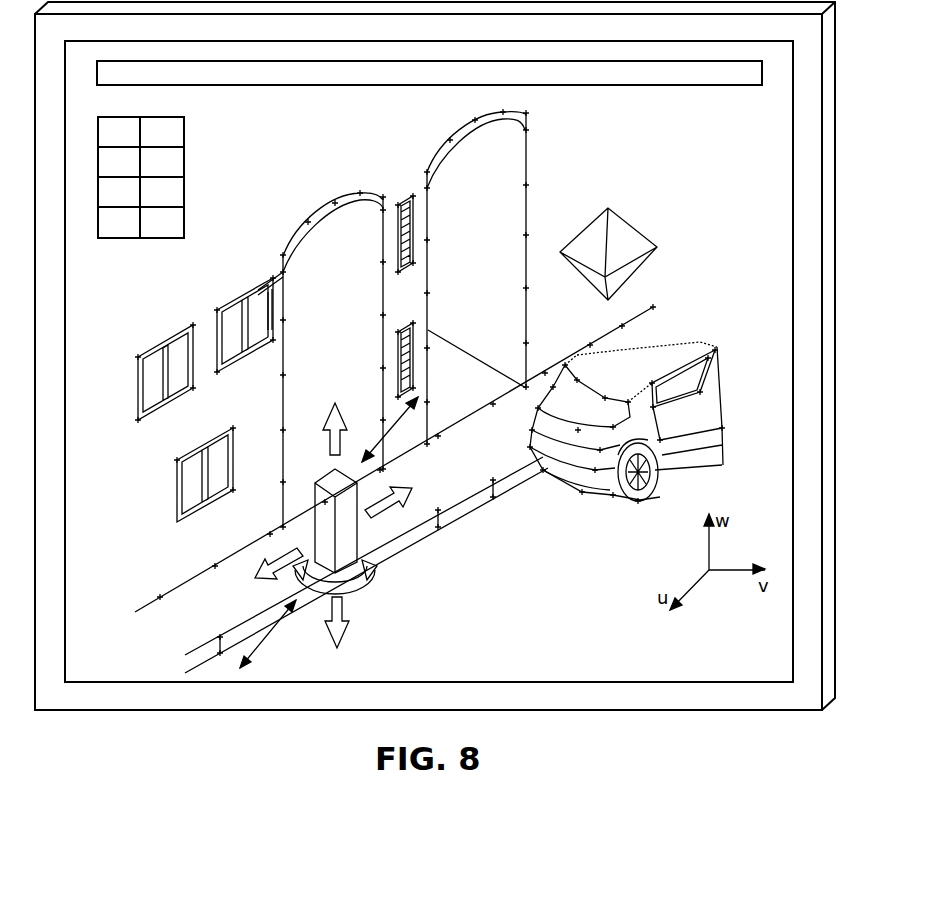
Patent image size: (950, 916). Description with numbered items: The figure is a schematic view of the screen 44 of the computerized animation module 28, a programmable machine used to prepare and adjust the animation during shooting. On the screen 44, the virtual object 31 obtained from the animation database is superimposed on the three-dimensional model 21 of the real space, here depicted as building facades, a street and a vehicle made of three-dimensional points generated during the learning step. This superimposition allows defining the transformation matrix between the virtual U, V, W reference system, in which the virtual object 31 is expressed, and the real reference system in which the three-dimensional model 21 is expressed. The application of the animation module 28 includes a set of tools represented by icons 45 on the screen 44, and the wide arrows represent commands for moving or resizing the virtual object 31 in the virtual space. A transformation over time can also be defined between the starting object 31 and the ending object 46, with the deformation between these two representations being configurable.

The computerized animation module 28 is at (97, 712).
The screen 44 is at (732, 640).
The icons 45 is at (157, 198).
The ending object 46 is at (625, 238).
The three-dimensional model 21 is at (683, 330).
The virtual object 31 is at (343, 545).